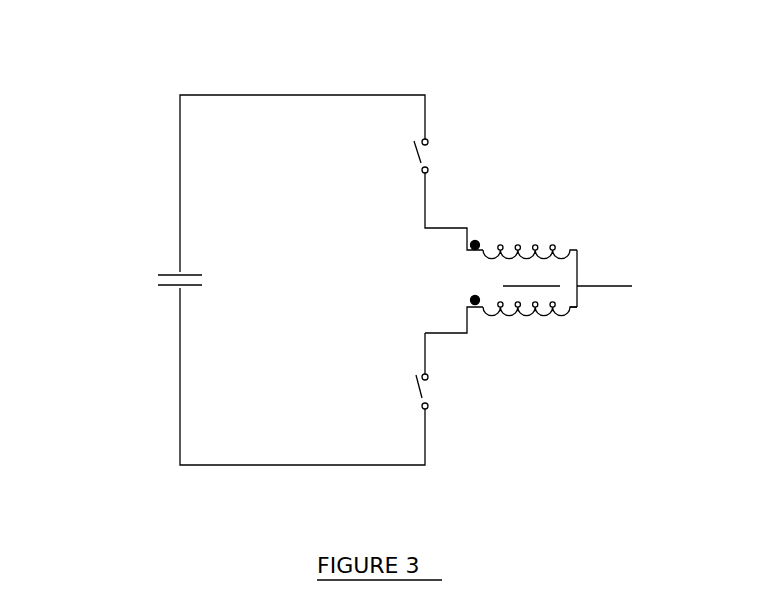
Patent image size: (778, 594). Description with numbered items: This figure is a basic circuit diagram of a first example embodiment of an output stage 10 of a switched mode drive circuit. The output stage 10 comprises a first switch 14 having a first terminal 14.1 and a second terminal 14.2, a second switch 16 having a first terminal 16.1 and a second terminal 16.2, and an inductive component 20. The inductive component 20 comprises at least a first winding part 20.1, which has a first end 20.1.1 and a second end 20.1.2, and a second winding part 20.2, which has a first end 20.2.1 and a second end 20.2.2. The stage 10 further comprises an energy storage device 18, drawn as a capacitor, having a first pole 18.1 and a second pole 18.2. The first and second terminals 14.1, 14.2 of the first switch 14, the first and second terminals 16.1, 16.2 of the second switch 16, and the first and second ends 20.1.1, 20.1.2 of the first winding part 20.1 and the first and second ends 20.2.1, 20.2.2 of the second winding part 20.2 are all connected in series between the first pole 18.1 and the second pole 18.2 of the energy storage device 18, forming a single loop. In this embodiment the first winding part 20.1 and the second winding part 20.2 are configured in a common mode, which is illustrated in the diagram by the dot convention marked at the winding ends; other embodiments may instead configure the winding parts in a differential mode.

The output stage 10 is at (514, 123).
The first switch 14 is at (334, 169).
The first terminal 14.1 is at (421, 139).
The second terminal 14.2 is at (422, 171).
The second switch 16 is at (339, 382).
The first terminal 16.1 is at (424, 374).
The second terminal 16.2 is at (423, 408).
The energy storage device 18 is at (116, 285).
The first pole 18.1 is at (170, 273).
The second pole 18.2 is at (170, 288).
The inductive component 20 is at (560, 301).
The first winding part 20.1 is at (527, 254).
The first end 20.1.1 is at (482, 253).
The second end 20.1.2 is at (576, 250).
The second winding part 20.2 is at (520, 322).
The first end 20.2.1 is at (478, 309).
The second end 20.2.2 is at (575, 310).